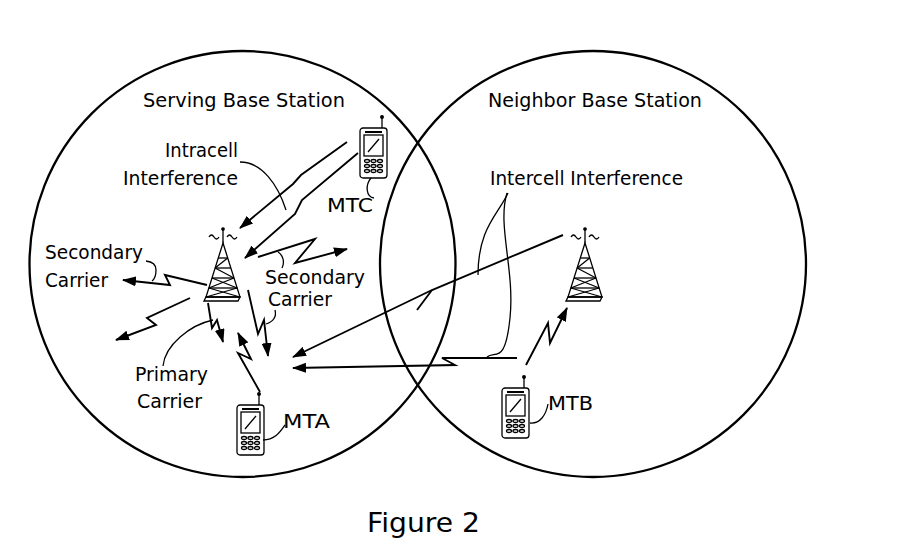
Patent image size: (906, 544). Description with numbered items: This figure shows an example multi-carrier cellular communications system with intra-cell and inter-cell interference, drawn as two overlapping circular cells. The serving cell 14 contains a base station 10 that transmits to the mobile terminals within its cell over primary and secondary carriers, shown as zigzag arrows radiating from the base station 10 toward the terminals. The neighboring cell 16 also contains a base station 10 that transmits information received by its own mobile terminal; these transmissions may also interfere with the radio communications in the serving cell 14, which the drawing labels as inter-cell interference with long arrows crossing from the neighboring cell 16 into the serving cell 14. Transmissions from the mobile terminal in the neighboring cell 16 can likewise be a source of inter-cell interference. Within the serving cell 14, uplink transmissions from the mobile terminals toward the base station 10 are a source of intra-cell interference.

The base station 10 is at (212, 289).
The serving cell 14 is at (223, 51).
The neighboring cell 16 is at (691, 70).